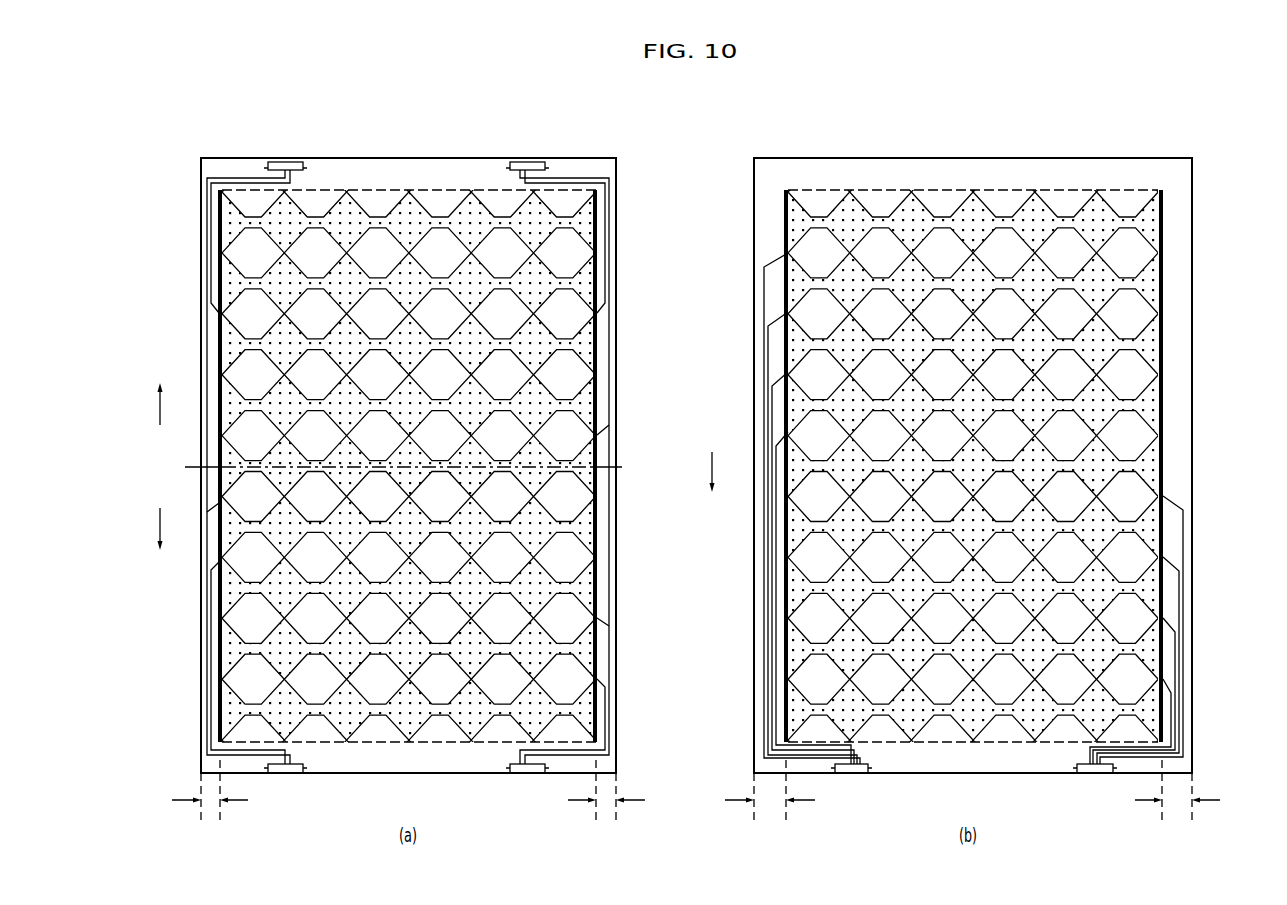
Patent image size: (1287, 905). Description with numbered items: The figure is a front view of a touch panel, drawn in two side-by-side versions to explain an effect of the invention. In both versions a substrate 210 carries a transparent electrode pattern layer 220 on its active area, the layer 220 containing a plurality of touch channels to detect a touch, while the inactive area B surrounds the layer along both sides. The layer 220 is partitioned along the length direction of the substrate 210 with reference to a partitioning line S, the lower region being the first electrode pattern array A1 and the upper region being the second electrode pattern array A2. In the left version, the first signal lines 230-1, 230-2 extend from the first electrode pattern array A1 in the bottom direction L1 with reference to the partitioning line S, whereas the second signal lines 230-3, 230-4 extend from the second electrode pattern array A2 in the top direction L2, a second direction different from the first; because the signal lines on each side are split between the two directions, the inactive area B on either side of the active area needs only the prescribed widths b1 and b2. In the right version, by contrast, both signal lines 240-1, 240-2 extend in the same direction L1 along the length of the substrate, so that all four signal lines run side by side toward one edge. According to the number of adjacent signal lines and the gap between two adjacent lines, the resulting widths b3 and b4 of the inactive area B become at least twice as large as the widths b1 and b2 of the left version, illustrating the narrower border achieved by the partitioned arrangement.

The substrate 210 is at (616, 690).
The transparent electrode pattern layer 220 is at (597, 452).
The first signal line 230-1 is at (201, 724).
The first signal line 230-2 is at (594, 620).
The second signal line 230-3 is at (201, 263).
The second signal line 230-4 is at (594, 463).
The signal line 240-1 is at (760, 548).
The signal line 240-2 is at (1192, 548).
The first electrode pattern array A1 is at (597, 550).
The second electrode pattern array A2 is at (597, 412).
The inactive area B is at (605, 580).
The partitioning line S is at (396, 466).
The bottom direction L1 is at (449, 501).
The top direction L2 is at (173, 404).
The width of inactive area b1 is at (210, 802).
The width of inactive area b2 is at (606, 802).
The width of inactive area b3 is at (770, 802).
The width of inactive area b4 is at (1177, 802).